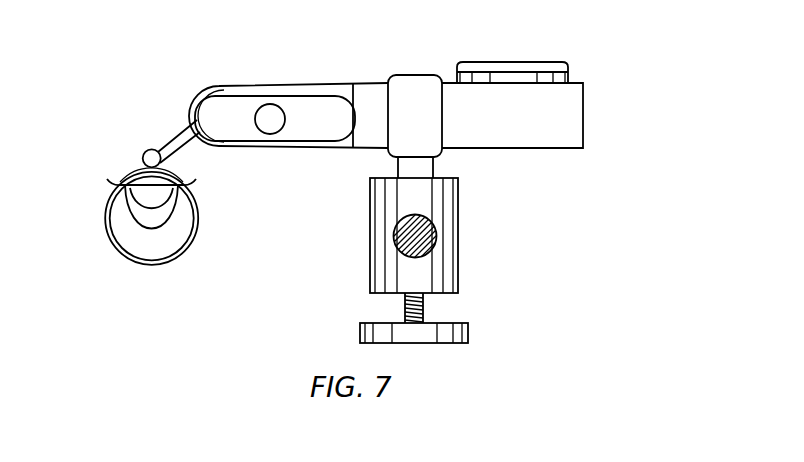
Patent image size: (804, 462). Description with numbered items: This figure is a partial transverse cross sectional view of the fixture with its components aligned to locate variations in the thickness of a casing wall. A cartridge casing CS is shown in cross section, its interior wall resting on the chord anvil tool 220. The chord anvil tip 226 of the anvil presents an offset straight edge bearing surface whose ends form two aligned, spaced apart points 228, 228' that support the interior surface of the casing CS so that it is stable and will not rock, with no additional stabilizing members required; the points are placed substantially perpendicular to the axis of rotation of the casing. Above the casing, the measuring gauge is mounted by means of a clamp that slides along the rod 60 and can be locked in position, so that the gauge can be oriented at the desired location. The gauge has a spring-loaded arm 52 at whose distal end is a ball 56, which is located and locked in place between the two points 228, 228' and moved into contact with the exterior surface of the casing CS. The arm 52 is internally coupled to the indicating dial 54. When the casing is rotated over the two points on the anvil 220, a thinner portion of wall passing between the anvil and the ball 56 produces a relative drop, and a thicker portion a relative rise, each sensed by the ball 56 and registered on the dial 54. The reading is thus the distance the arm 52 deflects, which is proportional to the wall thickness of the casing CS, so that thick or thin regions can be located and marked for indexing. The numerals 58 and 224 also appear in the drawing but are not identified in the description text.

The arm 52 is at (170, 136).
The indicating dial 54 is at (483, 62).
The ball 56 is at (147, 150).
The stand 58 is at (350, 262).
The rod 60 is at (430, 236).
The chord anvil tool 220 is at (123, 223).
The lens 224 is at (163, 222).
The chord anvil tip 226 is at (145, 177).
The support point 228' is at (83, 193).
The support point 228 is at (217, 193).
The casing CS is at (153, 263).